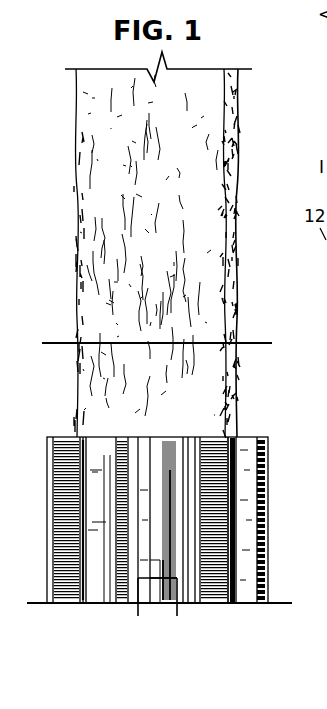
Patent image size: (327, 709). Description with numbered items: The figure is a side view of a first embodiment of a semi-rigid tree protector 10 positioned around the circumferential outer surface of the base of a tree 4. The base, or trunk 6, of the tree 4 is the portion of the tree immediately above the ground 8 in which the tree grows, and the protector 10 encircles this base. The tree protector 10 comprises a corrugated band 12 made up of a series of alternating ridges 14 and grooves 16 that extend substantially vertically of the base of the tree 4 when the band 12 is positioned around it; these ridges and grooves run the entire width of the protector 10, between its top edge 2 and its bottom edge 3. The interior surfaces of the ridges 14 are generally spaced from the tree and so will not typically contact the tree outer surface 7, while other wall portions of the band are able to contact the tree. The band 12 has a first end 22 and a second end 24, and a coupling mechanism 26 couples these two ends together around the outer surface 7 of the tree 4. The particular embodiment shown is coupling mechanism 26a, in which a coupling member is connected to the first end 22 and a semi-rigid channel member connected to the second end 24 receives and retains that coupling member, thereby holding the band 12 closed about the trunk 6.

The top edge 2 is at (265, 330).
The bottom edge 3 is at (290, 628).
The tree 4 is at (72, 158).
The trunk 6 is at (259, 547).
The tree outer surface 7 is at (246, 486).
The ground 8 is at (281, 601).
The tree protector 10 is at (63, 425).
The corrugated band 12 is at (273, 512).
The ridge 14 is at (205, 458).
The groove 16 is at (233, 450).
The first end 22 is at (132, 558).
The second end 24 is at (188, 557).
The coupling mechanism 26 is at (158, 626).
The coupling mechanism embodiment 26a is at (166, 661).